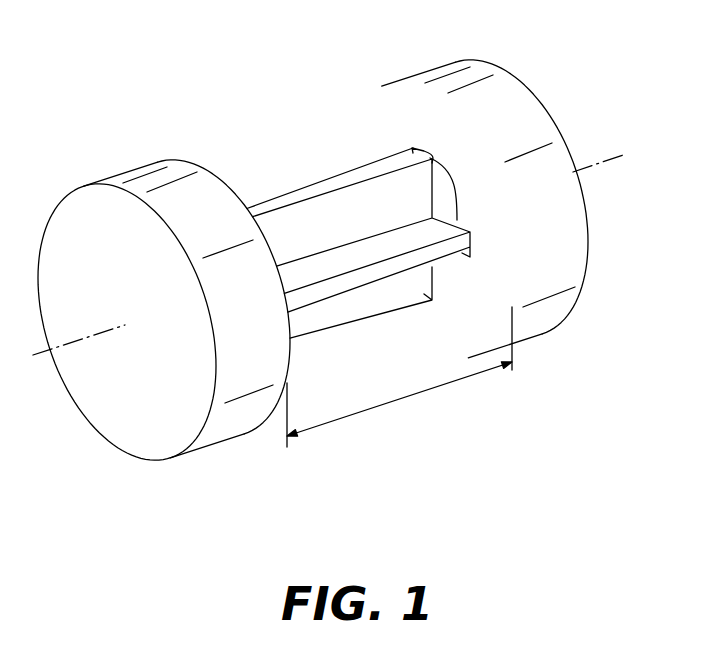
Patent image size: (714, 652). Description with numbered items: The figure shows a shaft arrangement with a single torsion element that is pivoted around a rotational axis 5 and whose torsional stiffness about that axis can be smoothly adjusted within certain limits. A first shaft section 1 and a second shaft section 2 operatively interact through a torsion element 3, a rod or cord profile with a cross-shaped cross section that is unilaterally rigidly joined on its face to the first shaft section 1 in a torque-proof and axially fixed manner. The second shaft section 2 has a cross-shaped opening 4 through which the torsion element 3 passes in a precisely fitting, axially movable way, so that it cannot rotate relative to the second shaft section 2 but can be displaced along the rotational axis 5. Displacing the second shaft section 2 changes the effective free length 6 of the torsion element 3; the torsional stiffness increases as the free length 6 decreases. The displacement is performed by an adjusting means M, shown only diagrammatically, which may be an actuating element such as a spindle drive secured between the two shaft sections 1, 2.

The first shaft section 1 is at (177, 192).
The second shaft section 2 is at (470, 102).
The torsion element 3 is at (313, 213).
The cross-shaped opening 4 is at (410, 150).
The rotational axis 5 is at (606, 162).
The free length 6 is at (412, 395).
The adjusting means M is at (230, 437).